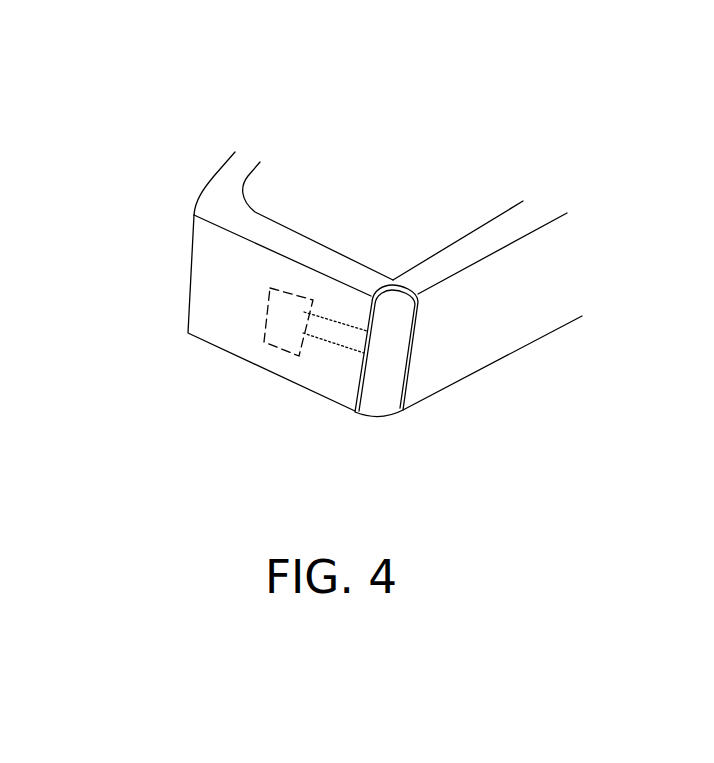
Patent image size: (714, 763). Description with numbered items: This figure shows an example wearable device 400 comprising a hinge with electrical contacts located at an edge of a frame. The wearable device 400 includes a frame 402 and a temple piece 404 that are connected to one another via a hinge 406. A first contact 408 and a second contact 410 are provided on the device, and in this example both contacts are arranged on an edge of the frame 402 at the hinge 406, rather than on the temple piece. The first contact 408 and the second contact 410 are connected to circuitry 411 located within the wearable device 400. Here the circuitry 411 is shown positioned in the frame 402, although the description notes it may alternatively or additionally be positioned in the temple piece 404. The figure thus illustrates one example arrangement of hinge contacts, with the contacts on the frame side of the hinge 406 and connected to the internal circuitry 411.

The wearable device 400 is at (78, 110).
The frame 402 is at (191, 278).
The temple piece 404 is at (533, 233).
The hinge 406 is at (423, 355).
The first contact 408 is at (368, 330).
The second contact 410 is at (363, 353).
The circuitry 411 is at (266, 334).